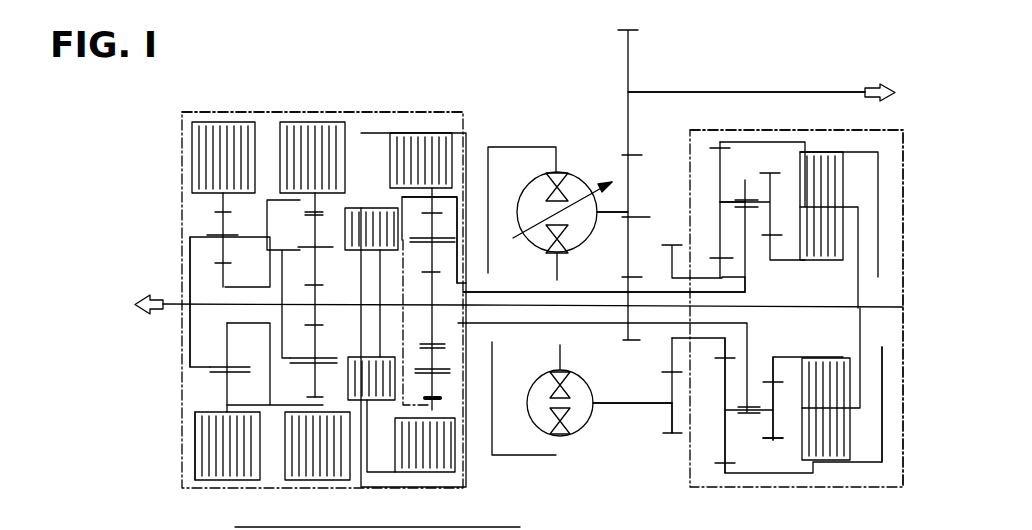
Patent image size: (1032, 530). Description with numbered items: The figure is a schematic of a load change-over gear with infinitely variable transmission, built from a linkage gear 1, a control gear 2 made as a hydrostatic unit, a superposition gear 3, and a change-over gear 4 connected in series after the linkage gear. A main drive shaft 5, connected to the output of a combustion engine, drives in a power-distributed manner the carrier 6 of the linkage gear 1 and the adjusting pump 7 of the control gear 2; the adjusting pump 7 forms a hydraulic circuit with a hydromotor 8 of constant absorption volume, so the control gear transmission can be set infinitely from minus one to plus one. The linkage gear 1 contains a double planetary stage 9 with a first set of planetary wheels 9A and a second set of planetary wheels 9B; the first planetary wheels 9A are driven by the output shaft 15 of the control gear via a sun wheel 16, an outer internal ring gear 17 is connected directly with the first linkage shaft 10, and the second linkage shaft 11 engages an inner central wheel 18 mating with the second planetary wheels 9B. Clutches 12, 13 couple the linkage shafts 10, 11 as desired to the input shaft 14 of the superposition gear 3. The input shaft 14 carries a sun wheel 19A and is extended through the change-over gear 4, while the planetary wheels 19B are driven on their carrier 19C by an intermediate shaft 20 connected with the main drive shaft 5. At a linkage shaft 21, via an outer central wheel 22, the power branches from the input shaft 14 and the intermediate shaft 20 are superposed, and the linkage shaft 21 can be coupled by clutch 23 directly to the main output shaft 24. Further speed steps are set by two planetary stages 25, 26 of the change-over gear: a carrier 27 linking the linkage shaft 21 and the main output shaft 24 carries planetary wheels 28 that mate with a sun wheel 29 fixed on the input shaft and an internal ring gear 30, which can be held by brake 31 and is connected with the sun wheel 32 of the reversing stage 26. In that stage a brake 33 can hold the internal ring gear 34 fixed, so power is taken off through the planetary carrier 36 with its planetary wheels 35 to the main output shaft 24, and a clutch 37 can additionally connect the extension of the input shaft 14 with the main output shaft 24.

The linkage gear 1 is at (790, 127).
The control gear 2 is at (563, 160).
The superposition gear 3 is at (447, 197).
The change-over gear 4 is at (398, 108).
The main drive shaft 5 is at (743, 92).
The carrier 6 is at (747, 277).
The adjusting pump 7 is at (530, 208).
The hydromotor 8 is at (582, 412).
The double planetary stage 9 is at (725, 197).
The first set of planetary wheels 9A is at (718, 222).
The second set of planetary wheels 9B is at (770, 428).
The first linkage shaft 10 is at (725, 138).
The second linkage shaft 11 is at (803, 262).
The clutch 12 is at (850, 447).
The clutch 13 is at (832, 372).
The input shaft 14 is at (607, 312).
The output shaft 15 is at (637, 405).
The sun wheel 16 is at (722, 358).
The outer internal ring gear 17 is at (718, 463).
The inner central wheel 18 is at (772, 372).
The sun wheel 19A is at (432, 300).
The planetary wheels 19B is at (436, 385).
The carrier 19C is at (453, 372).
The intermediate shaft 20 is at (593, 290).
The linkage shaft 21 is at (463, 417).
The outer central wheel 22 is at (437, 400).
The clutch 23 is at (425, 153).
The main output shaft 24 is at (212, 302).
The first planetary wheel stage 25 is at (315, 108).
The planetary wheel stage 26 is at (232, 108).
The carrier 27 is at (325, 253).
The planetary wheels 28 is at (308, 232).
The sun wheel 29 is at (325, 322).
The internal ring gear 30 is at (312, 395).
The brake 31 is at (312, 482).
The sun wheel 32 is at (241, 356).
The brake 33 is at (215, 462).
The internal ring gear 34 is at (213, 395).
The planetary wheels 35 is at (190, 380).
The planetary carrier 36 is at (190, 328).
The clutch 37 is at (370, 207).